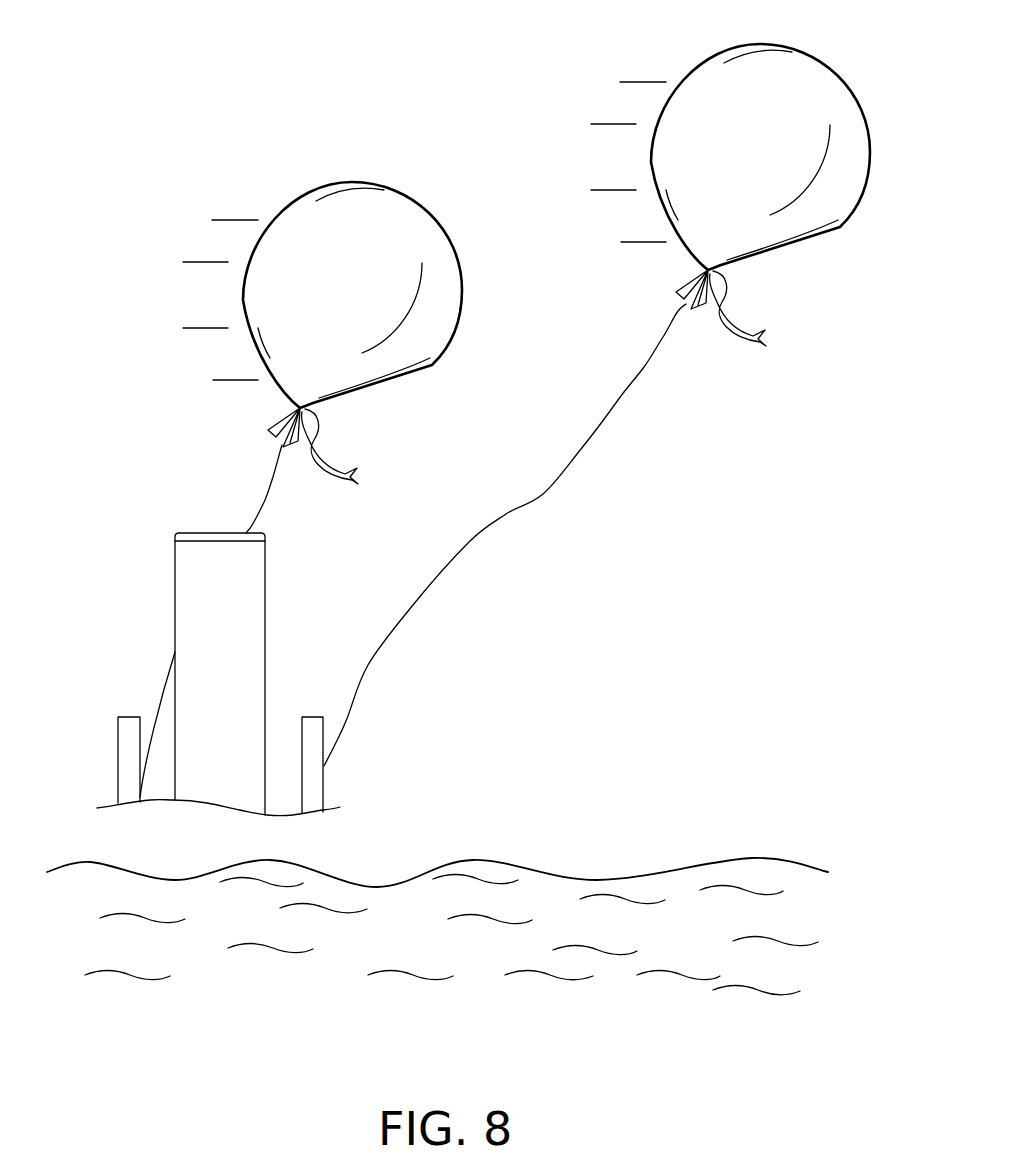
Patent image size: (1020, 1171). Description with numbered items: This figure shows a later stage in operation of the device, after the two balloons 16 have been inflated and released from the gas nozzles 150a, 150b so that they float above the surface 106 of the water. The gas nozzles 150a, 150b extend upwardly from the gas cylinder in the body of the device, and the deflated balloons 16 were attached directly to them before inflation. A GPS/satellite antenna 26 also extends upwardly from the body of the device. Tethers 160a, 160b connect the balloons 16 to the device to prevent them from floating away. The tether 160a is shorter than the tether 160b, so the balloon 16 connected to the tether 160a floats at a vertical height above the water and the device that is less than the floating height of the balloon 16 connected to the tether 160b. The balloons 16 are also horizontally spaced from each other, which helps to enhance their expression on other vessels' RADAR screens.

The balloon 16 is at (306, 205).
The GPS/satellite antenna 26 is at (183, 605).
The surface of the water 106 is at (732, 858).
The gas nozzle 150a is at (127, 738).
The gas nozzle 150b is at (313, 720).
The tether 160a is at (265, 499).
The tether 160b is at (504, 516).